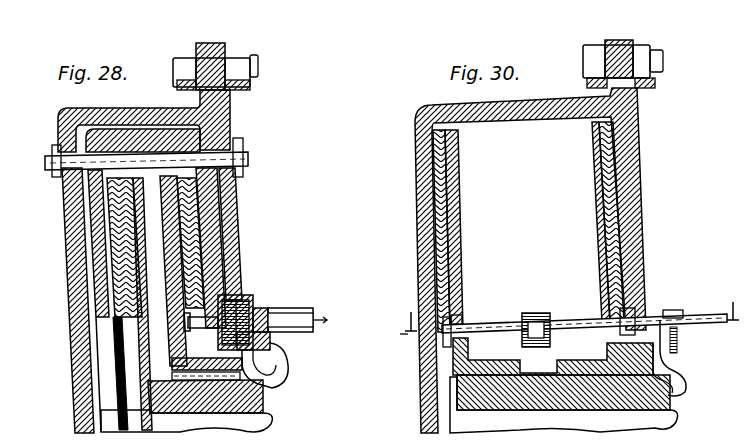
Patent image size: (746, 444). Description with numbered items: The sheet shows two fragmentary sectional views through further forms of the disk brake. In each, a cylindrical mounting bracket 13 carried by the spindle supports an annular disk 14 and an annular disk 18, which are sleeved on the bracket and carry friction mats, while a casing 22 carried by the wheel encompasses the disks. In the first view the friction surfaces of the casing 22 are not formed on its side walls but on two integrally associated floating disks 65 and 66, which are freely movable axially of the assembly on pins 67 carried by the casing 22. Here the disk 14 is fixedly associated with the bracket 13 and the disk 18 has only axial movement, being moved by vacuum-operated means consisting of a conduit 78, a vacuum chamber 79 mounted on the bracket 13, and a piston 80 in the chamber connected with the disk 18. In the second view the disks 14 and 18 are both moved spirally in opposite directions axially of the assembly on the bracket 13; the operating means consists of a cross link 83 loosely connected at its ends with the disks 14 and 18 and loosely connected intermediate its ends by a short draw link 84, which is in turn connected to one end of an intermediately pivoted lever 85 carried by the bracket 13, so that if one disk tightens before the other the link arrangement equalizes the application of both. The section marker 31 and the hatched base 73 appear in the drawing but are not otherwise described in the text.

In FIG. 28, the cylindrical mounting bracket 13 is at (265, 412).
In FIG. 28, the annular disk 14 is at (99, 282).
In FIG. 30, the annular disk 14 is at (445, 218).
In FIG. 28, the annular disk 18 is at (215, 254).
In FIG. 30, the annular disk 18 is at (612, 210).
In FIG. 28, the casing 22 is at (118, 108).
In FIG. 30, the casing 22 is at (486, 106).
In FIG. 30, the section line 31 is at (573, 329).
In FIG. 28, the floating disk 65 is at (80, 228).
In FIG. 28, the floating disk 66 is at (238, 224).
In FIG. 28, the pin 67 is at (250, 156).
In FIG. 30, the base plate 73 is at (672, 408).
In FIG. 28, the conduit 78 is at (292, 306).
In FIG. 28, the vacuum chamber 79 is at (262, 306).
In FIG. 28, the piston 80 is at (242, 298).
In FIG. 30, the cross link 83 is at (575, 314).
In FIG. 30, the draw link 84 is at (530, 313).
In FIG. 30, the lever 85 is at (688, 364).